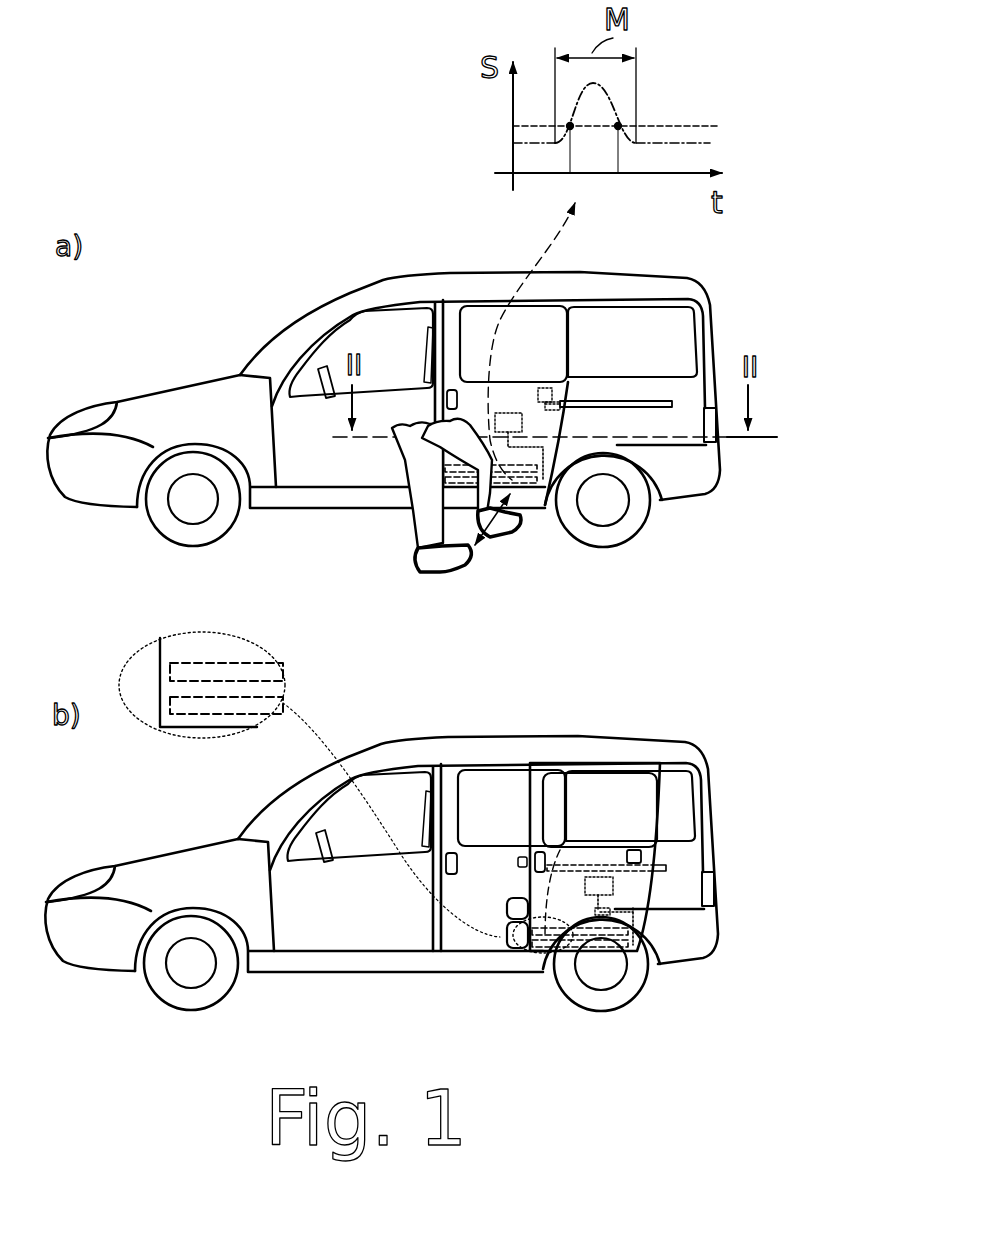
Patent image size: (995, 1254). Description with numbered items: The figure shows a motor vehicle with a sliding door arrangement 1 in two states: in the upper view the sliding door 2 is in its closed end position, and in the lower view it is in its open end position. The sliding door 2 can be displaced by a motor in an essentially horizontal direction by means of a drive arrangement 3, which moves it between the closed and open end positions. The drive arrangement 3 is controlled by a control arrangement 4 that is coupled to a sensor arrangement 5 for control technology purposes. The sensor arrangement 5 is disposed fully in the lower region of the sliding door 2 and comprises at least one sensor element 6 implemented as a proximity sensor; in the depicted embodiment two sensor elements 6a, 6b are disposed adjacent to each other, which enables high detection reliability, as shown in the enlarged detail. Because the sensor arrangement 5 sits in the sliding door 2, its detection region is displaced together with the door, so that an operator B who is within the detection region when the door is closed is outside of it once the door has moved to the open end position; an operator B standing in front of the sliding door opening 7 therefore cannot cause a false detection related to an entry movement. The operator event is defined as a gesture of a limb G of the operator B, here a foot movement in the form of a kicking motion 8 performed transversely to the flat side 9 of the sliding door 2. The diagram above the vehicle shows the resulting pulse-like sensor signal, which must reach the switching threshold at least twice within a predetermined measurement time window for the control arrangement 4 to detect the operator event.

The sliding door arrangement 1 is at (629, 353).
The sliding door 2 is at (563, 386).
The drive arrangement 3 is at (565, 396).
The control arrangement 4 is at (522, 422).
The sensor arrangement 5 is at (541, 523).
The sensor element 6 is at (275, 723).
The first sensor element 6a is at (260, 668).
The second sensor element 6b is at (193, 707).
The sliding door opening 7 is at (453, 940).
The kicking motion 8 is at (486, 540).
The flat side 9 is at (534, 409).
The operator B is at (403, 521).
The limb G is at (480, 500).